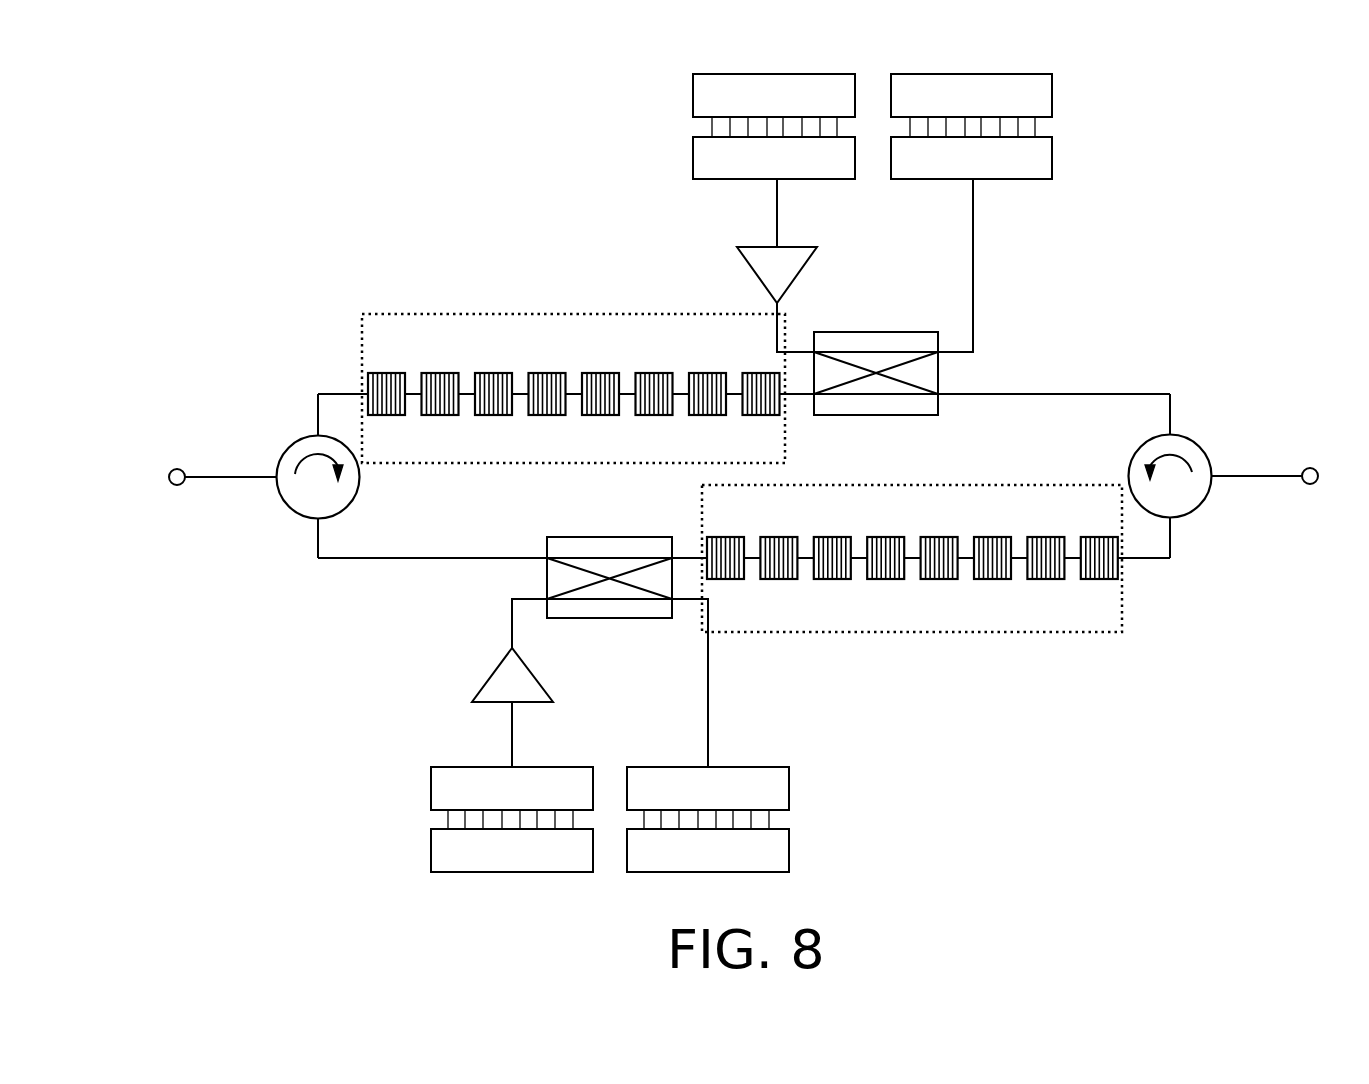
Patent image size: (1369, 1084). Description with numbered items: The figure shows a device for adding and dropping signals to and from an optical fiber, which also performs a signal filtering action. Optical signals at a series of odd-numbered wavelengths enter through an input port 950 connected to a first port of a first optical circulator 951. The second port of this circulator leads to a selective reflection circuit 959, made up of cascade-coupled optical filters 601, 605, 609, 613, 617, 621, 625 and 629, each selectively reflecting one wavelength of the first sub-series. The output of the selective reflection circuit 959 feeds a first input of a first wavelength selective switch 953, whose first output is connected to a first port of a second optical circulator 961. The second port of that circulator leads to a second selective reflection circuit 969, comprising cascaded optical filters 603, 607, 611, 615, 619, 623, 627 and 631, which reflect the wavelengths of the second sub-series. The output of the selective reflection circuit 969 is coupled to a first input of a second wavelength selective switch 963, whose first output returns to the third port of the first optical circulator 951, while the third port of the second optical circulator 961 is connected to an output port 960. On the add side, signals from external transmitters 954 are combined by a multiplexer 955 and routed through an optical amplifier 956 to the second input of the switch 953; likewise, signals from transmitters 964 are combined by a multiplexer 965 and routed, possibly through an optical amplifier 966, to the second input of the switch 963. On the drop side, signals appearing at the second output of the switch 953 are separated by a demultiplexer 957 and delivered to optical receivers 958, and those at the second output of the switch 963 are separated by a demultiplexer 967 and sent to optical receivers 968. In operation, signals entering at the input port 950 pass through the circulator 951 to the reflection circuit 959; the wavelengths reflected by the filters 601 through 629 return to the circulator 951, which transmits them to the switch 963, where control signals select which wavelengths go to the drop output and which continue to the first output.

The optical filter 601 is at (386, 369).
The optical filter 603 is at (1098, 582).
The optical filter 605 is at (439, 369).
The optical filter 607 is at (1045, 582).
The optical filter 609 is at (493, 369).
The optical filter 611 is at (992, 582).
The optical filter 613 is at (546, 369).
The optical filter 615 is at (938, 582).
The optical filter 617 is at (599, 369).
The optical filter 619 is at (885, 582).
The optical filter 621 is at (653, 369).
The optical filter 623 is at (831, 582).
The optical filter 625 is at (706, 369).
The optical filter 627 is at (778, 582).
The optical filter 629 is at (761, 417).
The optical filter 631 is at (724, 540).
The input port 950 is at (182, 468).
The first optical circulator 951 is at (285, 462).
The first wavelength selective switch 953 is at (888, 336).
The transmitters 954 is at (754, 107).
The multiplexer 955 is at (754, 171).
The optical amplifier 956 is at (770, 283).
The demultiplexer 957 is at (951, 171).
The optical receivers 958 is at (951, 107).
The selective reflection circuit 959 is at (355, 332).
The output port 960 is at (1310, 467).
The second optical circulator 961 is at (1212, 468).
The second wavelength selective switch 963 is at (617, 607).
The transmitters 964 is at (492, 863).
The multiplexer 965 is at (492, 800).
The optical amplifier 966 is at (503, 682).
The demultiplexer 967 is at (688, 800).
The optical receivers 968 is at (688, 863).
The selective reflection circuit 969 is at (1131, 602).